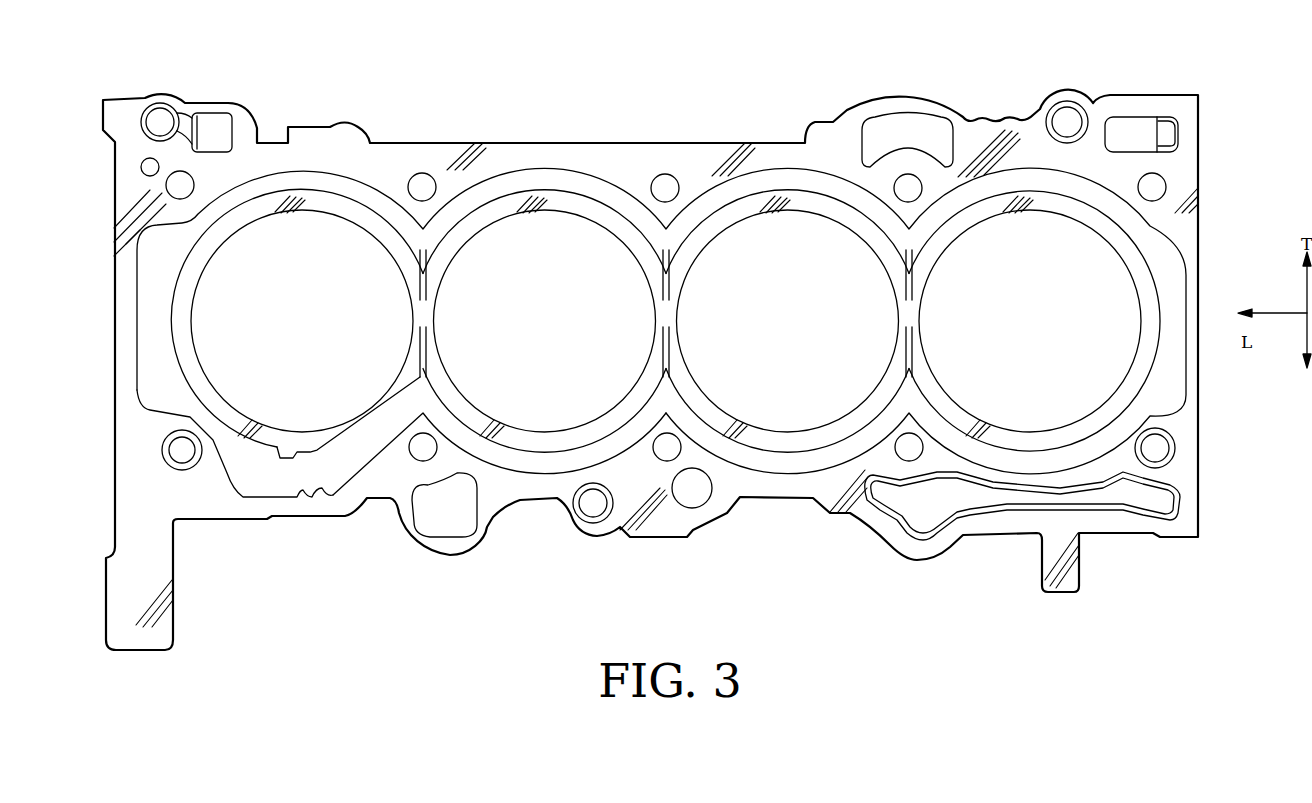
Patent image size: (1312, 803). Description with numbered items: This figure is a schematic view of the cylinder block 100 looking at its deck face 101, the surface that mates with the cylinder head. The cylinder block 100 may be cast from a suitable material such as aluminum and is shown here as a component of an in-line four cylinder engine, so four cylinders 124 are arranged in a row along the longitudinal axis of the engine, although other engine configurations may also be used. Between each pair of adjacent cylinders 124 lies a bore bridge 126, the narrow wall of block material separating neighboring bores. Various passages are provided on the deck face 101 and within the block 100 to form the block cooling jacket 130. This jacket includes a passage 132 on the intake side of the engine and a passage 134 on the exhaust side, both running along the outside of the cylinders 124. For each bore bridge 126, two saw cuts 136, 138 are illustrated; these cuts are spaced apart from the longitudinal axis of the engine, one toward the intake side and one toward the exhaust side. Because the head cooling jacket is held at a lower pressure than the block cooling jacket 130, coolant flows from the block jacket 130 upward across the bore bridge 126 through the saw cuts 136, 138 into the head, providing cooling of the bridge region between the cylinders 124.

The cylinder block 100 is at (692, 143).
The deck face 101 is at (827, 150).
The cylinders 124 is at (278, 334).
The bore bridge 126 is at (410, 322).
The block cooling jacket 130 is at (543, 462).
The passage 132 is at (420, 398).
The passage 134 is at (385, 200).
The saw cut 136 is at (425, 353).
The saw cut 138 is at (425, 282).